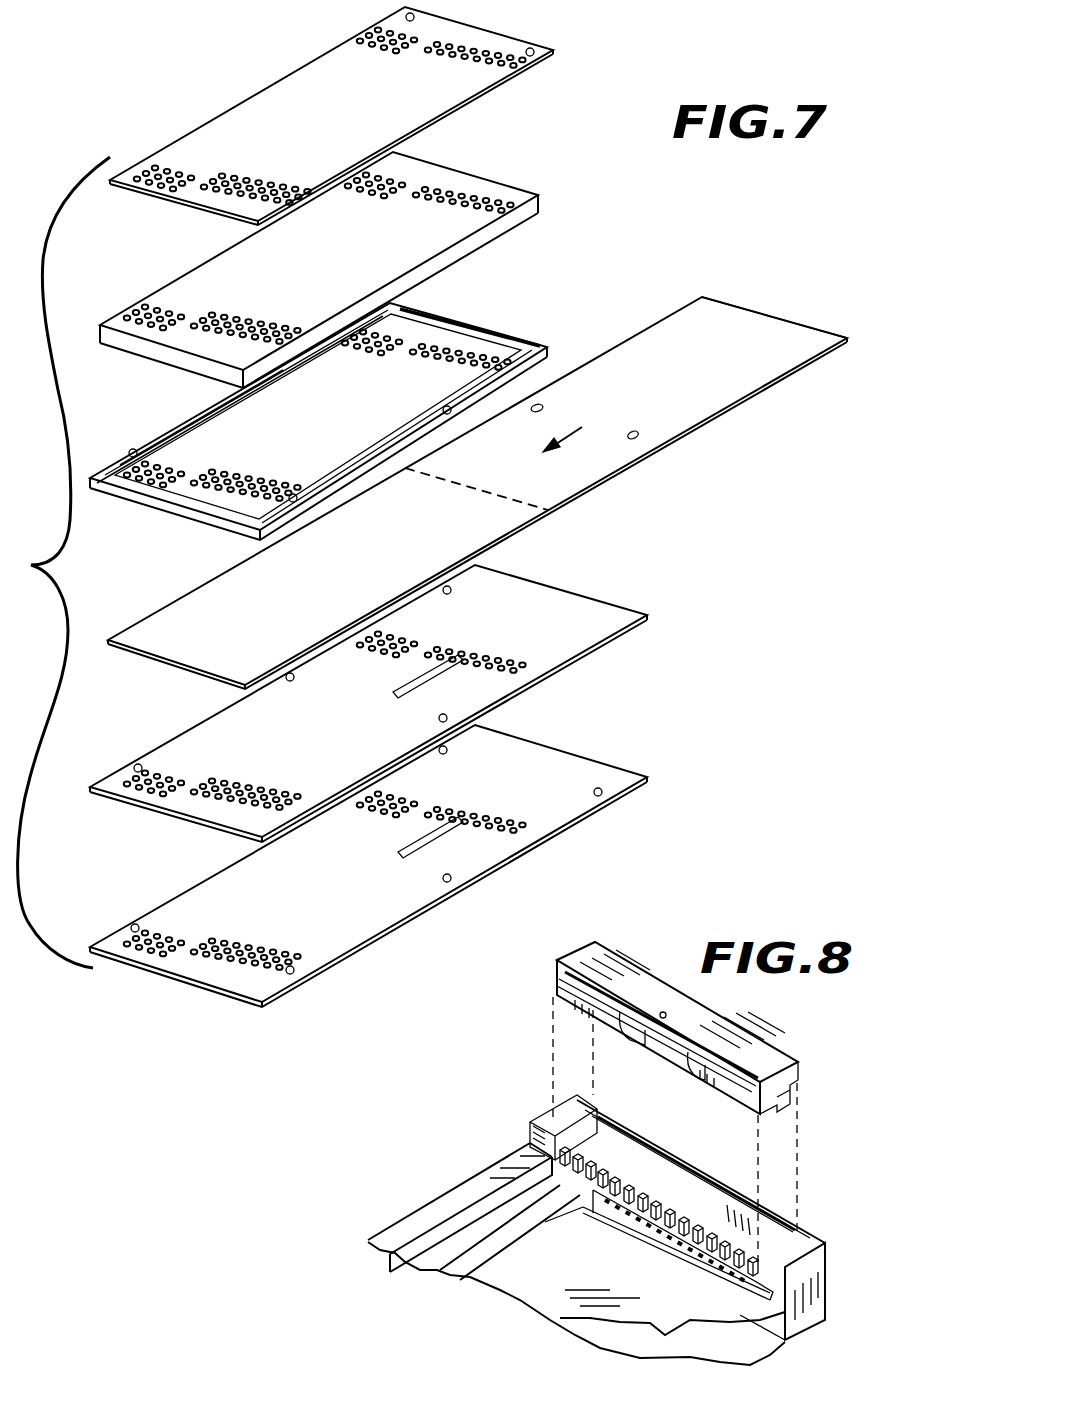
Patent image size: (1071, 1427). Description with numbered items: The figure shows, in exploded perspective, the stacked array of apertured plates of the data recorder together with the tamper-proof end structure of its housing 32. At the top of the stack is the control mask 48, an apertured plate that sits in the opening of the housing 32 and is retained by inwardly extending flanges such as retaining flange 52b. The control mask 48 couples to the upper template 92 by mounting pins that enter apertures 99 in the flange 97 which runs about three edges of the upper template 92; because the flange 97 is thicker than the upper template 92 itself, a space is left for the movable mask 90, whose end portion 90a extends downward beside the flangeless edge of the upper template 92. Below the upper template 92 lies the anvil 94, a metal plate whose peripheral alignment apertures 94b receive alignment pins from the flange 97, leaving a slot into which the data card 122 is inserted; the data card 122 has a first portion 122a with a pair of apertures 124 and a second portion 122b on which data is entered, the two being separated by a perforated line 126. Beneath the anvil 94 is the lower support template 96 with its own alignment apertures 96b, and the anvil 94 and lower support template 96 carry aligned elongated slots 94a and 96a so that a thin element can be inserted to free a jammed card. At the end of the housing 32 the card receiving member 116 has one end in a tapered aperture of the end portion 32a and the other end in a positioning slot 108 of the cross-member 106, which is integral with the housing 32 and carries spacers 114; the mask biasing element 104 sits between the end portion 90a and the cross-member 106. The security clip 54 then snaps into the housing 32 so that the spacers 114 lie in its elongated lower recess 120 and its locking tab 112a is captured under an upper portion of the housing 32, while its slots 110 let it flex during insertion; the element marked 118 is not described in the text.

In FIG. 7, the control mask 48 is at (340, 116).
In FIG. 8, the control mask 48 is at (623, 1323).
In FIG. 7, the movable mask 90 is at (348, 261).
In FIG. 7, the end portion of movable mask 90a is at (165, 352).
In FIG. 8, the end portion of movable mask 90a is at (545, 1188).
In FIG. 7, the upper template 92 is at (335, 426).
In FIG. 7, the flange 97 is at (460, 322).
In FIG. 7, the apertures 99 is at (165, 448).
In FIG. 7, the data card 122 is at (678, 437).
In FIG. 7, the first portion of data card 122a is at (740, 370).
In FIG. 7, the second portion of data card 122b is at (345, 594).
In FIG. 7, the apertures 124 is at (630, 433).
In FIG. 7, the perforated line 126 is at (483, 492).
In FIG. 7, the anvil 94 is at (335, 765).
In FIG. 7, the elongated slot of anvil 94a is at (420, 690).
In FIG. 7, the alignment apertures 94b is at (143, 765).
In FIG. 7, the lower support template 96 is at (262, 912).
In FIG. 7, the elongated slot of lower support template 96a is at (402, 853).
In FIG. 7, the alignment apertures 96b is at (600, 796).
In FIG. 8, the security clip 54 is at (712, 1009).
In FIG. 8, the slots 110 is at (695, 1062).
In FIG. 8, the locking tab 112a is at (800, 1077).
In FIG. 8, the elongated lower recess 120 is at (775, 1100).
In FIG. 8, the housing 32 is at (827, 1262).
In FIG. 8, the end portion of housing 32a is at (768, 1210).
In FIG. 8, the housing base 118 is at (783, 1337).
In FIG. 8, the mask biasing element 104 is at (643, 1233).
In FIG. 8, the cross-member 106 is at (610, 1158).
In FIG. 8, the positioning slot 108 is at (663, 1205).
In FIG. 8, the spacers 114 is at (703, 1232).
In FIG. 8, the card receiving member 116 is at (553, 1222).
In FIG. 8, the retaining flange 52b is at (440, 1263).